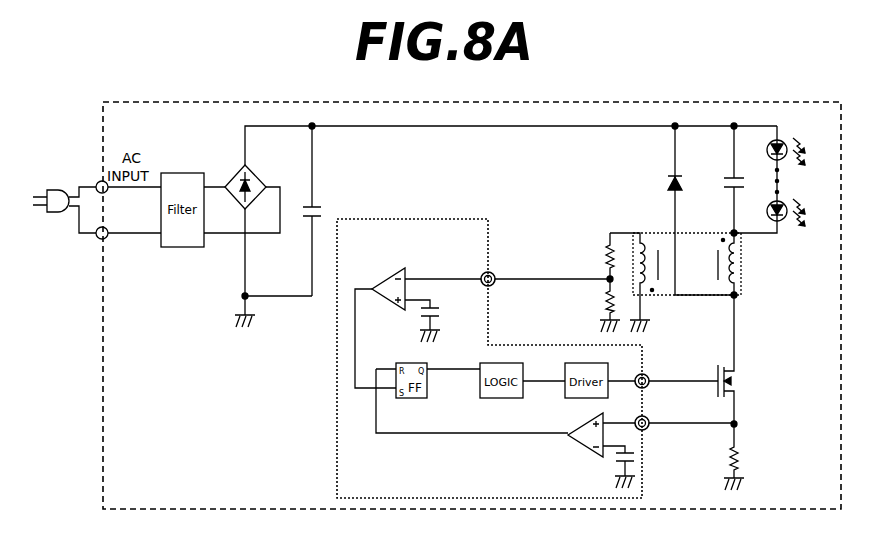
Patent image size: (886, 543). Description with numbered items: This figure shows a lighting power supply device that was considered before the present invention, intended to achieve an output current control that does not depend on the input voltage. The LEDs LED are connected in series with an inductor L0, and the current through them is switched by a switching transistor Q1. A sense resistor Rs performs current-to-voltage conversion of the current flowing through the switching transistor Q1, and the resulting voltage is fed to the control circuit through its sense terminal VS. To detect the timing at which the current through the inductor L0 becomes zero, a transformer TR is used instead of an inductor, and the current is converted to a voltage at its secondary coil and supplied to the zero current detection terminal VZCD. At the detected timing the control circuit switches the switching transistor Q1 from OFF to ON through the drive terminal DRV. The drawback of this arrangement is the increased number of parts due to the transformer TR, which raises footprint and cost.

The zero current detection terminal VZCD is at (497, 273).
The transformer TR is at (662, 233).
The inductor L0 is at (741, 264).
The LEDs LED is at (772, 193).
The switching transistor Q1 is at (741, 359).
The sense resistor Rs is at (743, 457).
The drive output terminal DRV is at (663, 375).
The voltage sense terminal VS is at (648, 430).